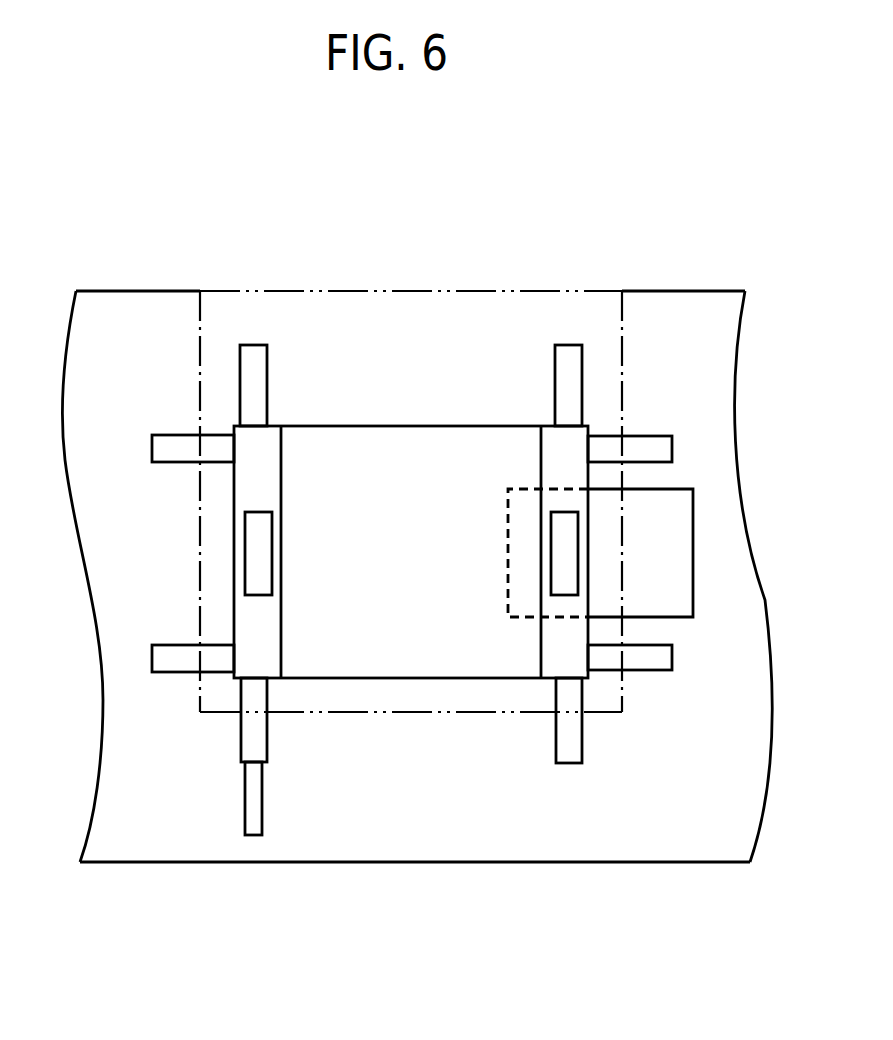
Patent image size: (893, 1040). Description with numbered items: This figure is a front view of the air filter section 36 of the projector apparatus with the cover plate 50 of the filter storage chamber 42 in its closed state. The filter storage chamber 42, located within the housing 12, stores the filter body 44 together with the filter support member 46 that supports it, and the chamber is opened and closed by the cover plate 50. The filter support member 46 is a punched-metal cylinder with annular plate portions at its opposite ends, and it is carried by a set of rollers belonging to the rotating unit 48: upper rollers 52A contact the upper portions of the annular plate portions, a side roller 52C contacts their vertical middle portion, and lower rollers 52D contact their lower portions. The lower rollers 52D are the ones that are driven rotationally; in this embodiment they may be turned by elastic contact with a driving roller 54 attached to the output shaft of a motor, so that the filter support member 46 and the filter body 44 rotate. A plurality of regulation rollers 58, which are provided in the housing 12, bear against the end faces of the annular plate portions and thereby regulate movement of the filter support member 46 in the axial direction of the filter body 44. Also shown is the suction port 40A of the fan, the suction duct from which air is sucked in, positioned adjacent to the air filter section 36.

The housing 12 is at (680, 303).
The air filter section 36 is at (388, 337).
The suction port 40A is at (672, 498).
The filter storage chamber 42 is at (302, 312).
The filter body 44 is at (518, 442).
The filter support member 46 is at (233, 487).
The rotating unit 48 is at (200, 730).
The cover plate 50 is at (480, 291).
The upper rollers 52A is at (247, 365).
The side roller 52C is at (252, 553).
The lower rollers 52D is at (262, 743).
The driving roller 54 is at (258, 797).
The regulation rollers 58 is at (167, 447).